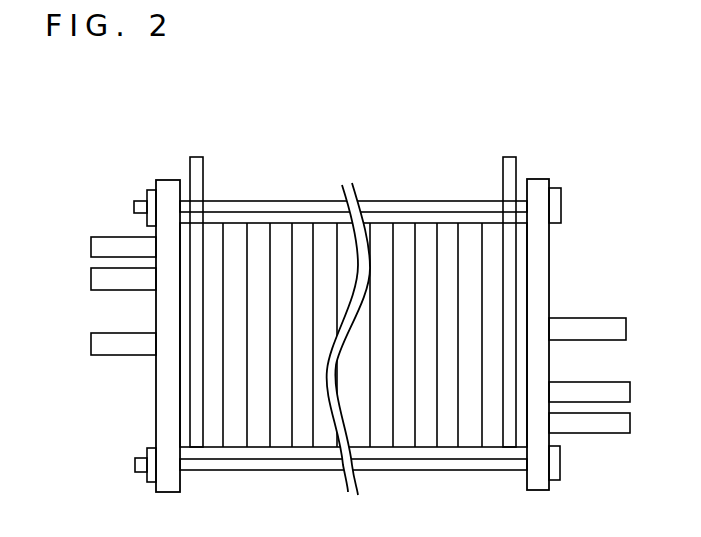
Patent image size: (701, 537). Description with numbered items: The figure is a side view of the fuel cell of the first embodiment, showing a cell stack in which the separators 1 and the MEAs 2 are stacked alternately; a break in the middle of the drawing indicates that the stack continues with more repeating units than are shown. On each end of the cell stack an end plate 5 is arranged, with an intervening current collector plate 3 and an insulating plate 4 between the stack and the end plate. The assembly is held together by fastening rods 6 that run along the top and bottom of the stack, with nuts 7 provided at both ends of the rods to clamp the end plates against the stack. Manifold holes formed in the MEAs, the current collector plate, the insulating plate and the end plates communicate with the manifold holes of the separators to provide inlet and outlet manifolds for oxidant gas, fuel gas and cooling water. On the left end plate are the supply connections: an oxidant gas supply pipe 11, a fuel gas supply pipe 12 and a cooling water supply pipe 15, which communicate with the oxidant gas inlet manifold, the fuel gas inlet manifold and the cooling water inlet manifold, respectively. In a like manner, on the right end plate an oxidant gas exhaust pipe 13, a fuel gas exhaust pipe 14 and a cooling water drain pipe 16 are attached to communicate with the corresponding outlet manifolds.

The separator 1 is at (261, 433).
The MEA 2 is at (237, 233).
The current collector plate 3 is at (196, 157).
The insulating plate 4 is at (188, 437).
The end plate 5 is at (169, 180).
The fastening rod 6 is at (409, 203).
The nut 7 is at (148, 195).
The oxidant gas supply pipe 11 is at (91, 241).
The fuel gas supply pipe 12 is at (95, 279).
The oxidant gas exhaust pipe 13 is at (622, 423).
The fuel gas exhaust pipe 14 is at (622, 386).
The cooling water supply pipe 15 is at (96, 344).
The cooling water drain pipe 16 is at (620, 322).